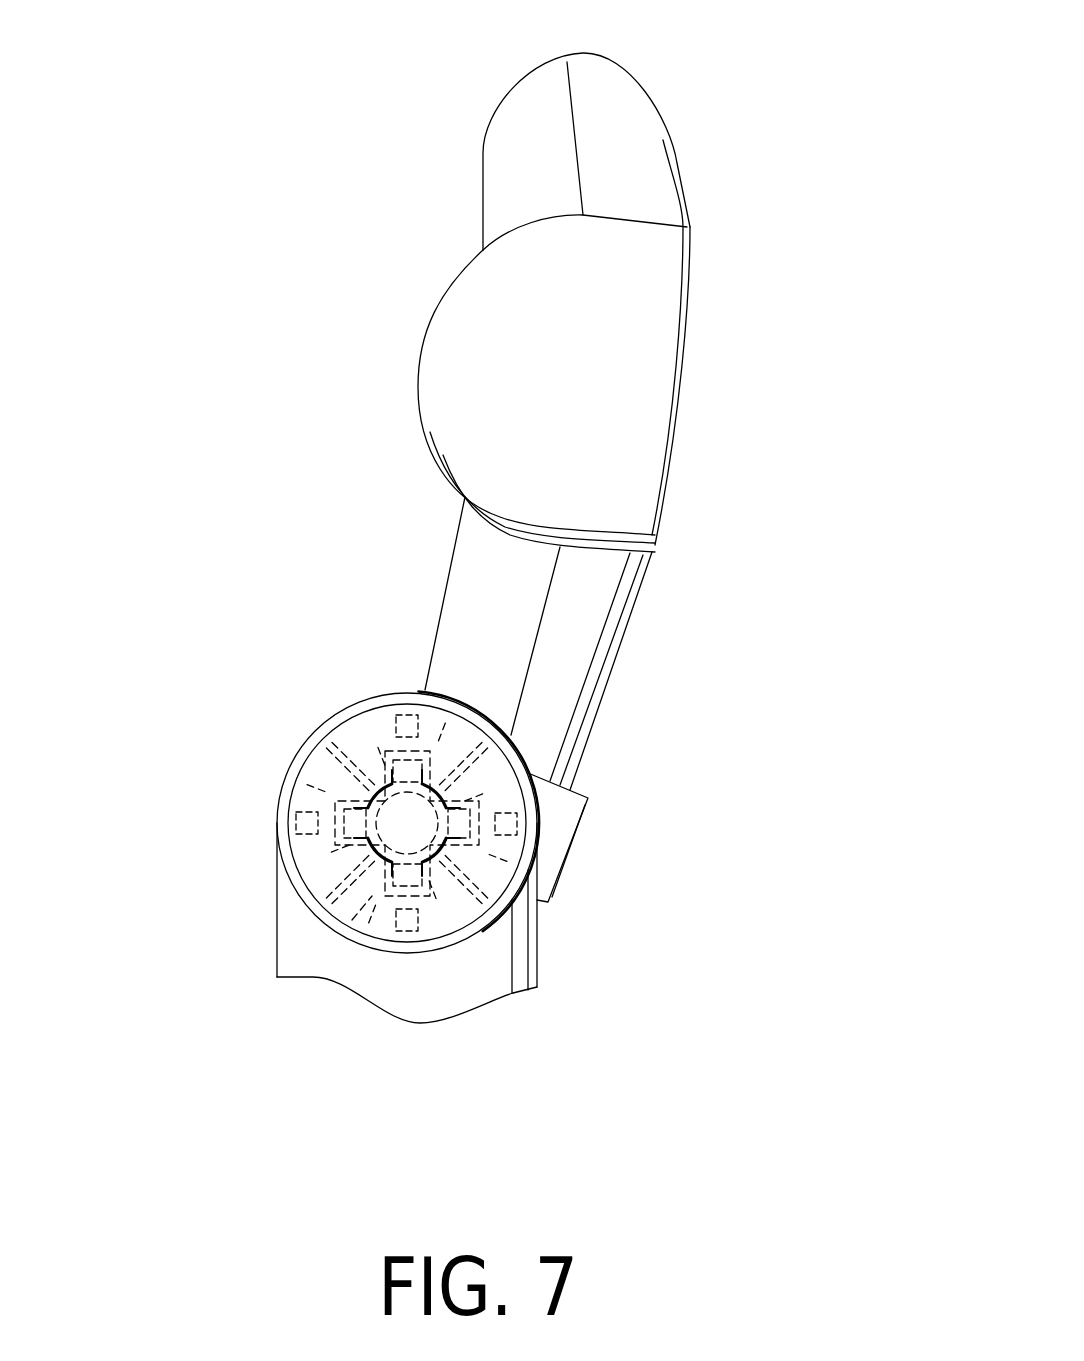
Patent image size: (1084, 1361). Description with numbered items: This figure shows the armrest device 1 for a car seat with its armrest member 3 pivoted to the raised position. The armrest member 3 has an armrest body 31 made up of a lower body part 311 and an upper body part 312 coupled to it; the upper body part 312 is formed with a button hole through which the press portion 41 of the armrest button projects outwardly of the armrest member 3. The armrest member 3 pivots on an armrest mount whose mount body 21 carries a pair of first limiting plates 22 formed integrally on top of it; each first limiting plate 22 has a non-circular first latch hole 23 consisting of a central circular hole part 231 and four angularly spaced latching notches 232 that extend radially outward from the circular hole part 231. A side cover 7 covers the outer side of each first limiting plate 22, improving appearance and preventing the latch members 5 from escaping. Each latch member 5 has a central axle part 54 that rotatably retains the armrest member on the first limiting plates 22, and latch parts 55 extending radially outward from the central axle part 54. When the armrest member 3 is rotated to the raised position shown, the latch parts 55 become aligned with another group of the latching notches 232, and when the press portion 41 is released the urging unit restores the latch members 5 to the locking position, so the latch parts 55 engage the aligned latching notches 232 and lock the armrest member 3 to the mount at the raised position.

The armrest device 1 is at (388, 245).
The armrest member 3 is at (665, 88).
The armrest body 31 is at (647, 153).
The lower body part 311 is at (512, 585).
The upper body part 312 is at (597, 625).
The side cover 7 is at (302, 750).
The press portion 41 is at (557, 837).
The mount body 21 is at (515, 953).
The first latch hole 23 is at (460, 940).
The latch member 5 is at (497, 717).
The latch part 55 is at (545, 775).
The first limiting plate 22 is at (395, 707).
The latching notch 232 is at (377, 805).
The central axle part 54 is at (278, 881).
The circular hole part 231 is at (352, 920).